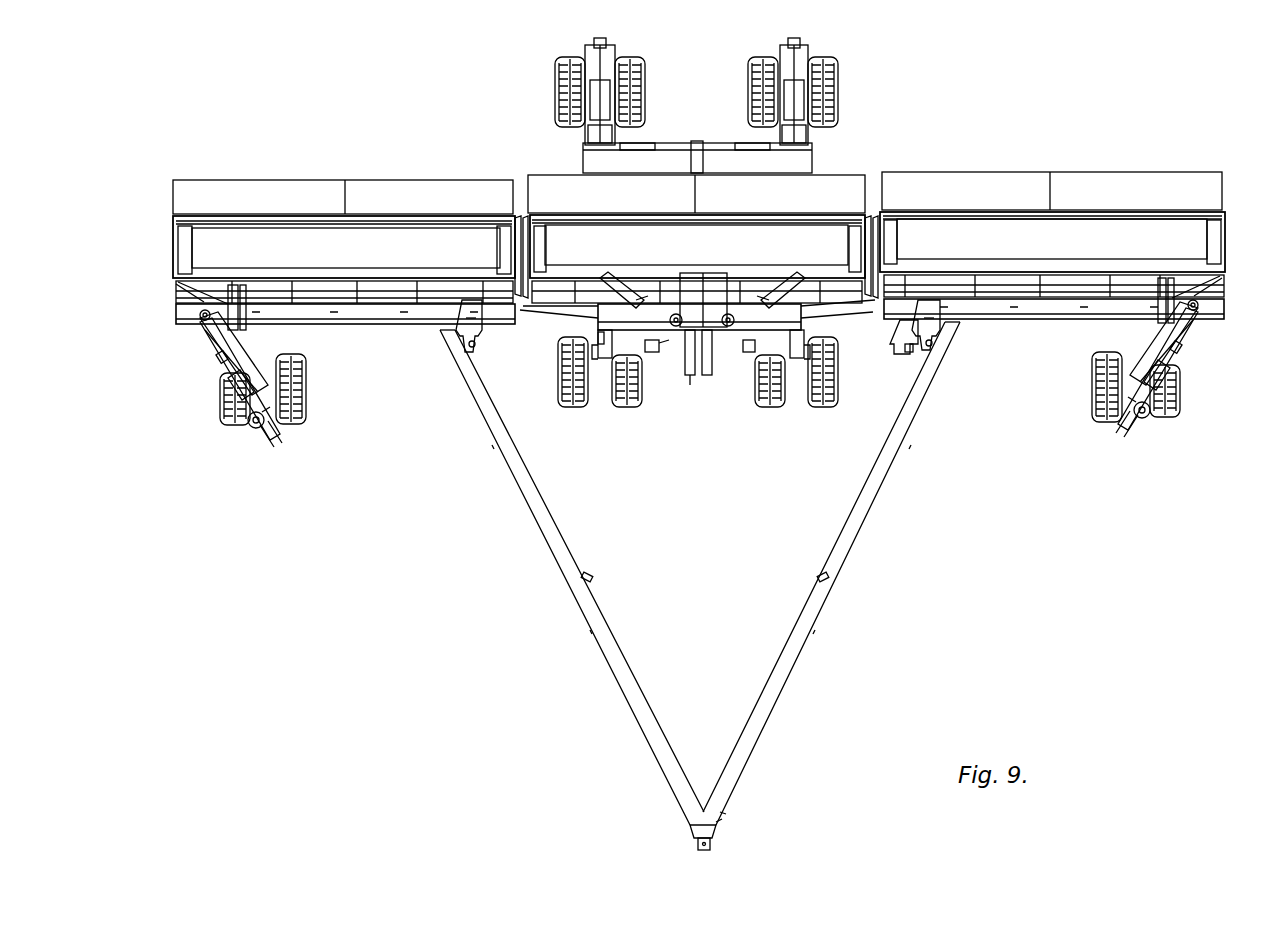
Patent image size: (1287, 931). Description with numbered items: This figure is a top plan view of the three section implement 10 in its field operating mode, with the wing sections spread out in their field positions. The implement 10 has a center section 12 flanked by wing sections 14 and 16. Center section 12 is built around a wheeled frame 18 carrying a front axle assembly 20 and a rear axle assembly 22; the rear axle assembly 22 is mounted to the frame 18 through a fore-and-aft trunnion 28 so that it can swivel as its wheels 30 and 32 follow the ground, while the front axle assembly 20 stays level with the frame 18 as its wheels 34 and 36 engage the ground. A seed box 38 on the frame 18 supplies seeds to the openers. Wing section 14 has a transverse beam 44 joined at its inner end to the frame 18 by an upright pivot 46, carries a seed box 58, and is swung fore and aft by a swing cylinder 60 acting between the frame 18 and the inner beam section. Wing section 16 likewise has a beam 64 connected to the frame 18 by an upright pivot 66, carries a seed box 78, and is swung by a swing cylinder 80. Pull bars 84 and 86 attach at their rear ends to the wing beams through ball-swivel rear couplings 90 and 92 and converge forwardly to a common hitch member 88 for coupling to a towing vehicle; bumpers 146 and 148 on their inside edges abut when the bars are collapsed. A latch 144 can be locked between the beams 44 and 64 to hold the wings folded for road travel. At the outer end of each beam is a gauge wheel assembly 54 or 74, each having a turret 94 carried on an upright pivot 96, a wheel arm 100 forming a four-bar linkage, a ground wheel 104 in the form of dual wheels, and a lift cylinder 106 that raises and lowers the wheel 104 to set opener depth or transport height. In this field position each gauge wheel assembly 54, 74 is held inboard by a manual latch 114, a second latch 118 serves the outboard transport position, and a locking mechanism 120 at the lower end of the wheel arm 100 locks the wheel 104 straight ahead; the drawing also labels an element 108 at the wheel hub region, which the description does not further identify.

The three section implement 10 is at (997, 84).
The center section 12 is at (688, 252).
The wing section 14 is at (341, 271).
The wing section 16 is at (1050, 262).
The frame 18 is at (695, 285).
The front axle assembly 20 is at (712, 402).
The rear axle assembly 22 is at (695, 87).
The fore-and-aft trunnion 28 is at (697, 140).
The wheel 30 is at (838, 70).
The wheel 32 is at (555, 70).
The wheel 34 is at (576, 410).
The wheel 36 is at (826, 410).
The seed box 38 is at (836, 232).
The beam 44 is at (377, 343).
The upright pivot 46 is at (675, 326).
The gauge wheel assembly 54 is at (248, 402).
The seed box 58 is at (220, 238).
The swing cylinder 60 is at (620, 280).
The beam 64 is at (1058, 322).
The upright pivot 66 is at (730, 326).
The gauge wheel assembly 74 is at (1157, 391).
The seed box 78 is at (1170, 225).
The swing cylinder 80 is at (778, 300).
The pull bar 84 is at (582, 628).
The pull bar 86 is at (820, 624).
The hitch member 88 is at (714, 836).
The rear coupling 90 is at (437, 335).
The rear coupling 92 is at (952, 334).
The turret 94 is at (208, 336).
The upright pivot 96 is at (199, 313).
The wheel arm 100 is at (226, 386).
The ground wheel 104 is at (312, 420).
The lift cylinder 106 is at (221, 405).
The marker wheel hub 108 is at (258, 430).
The manual latch 114 is at (240, 338).
The latch 118 is at (206, 362).
The locking mechanism 120 is at (287, 455).
The latch 144 is at (906, 352).
The bumper 146 is at (592, 580).
The bumper 148 is at (818, 580).